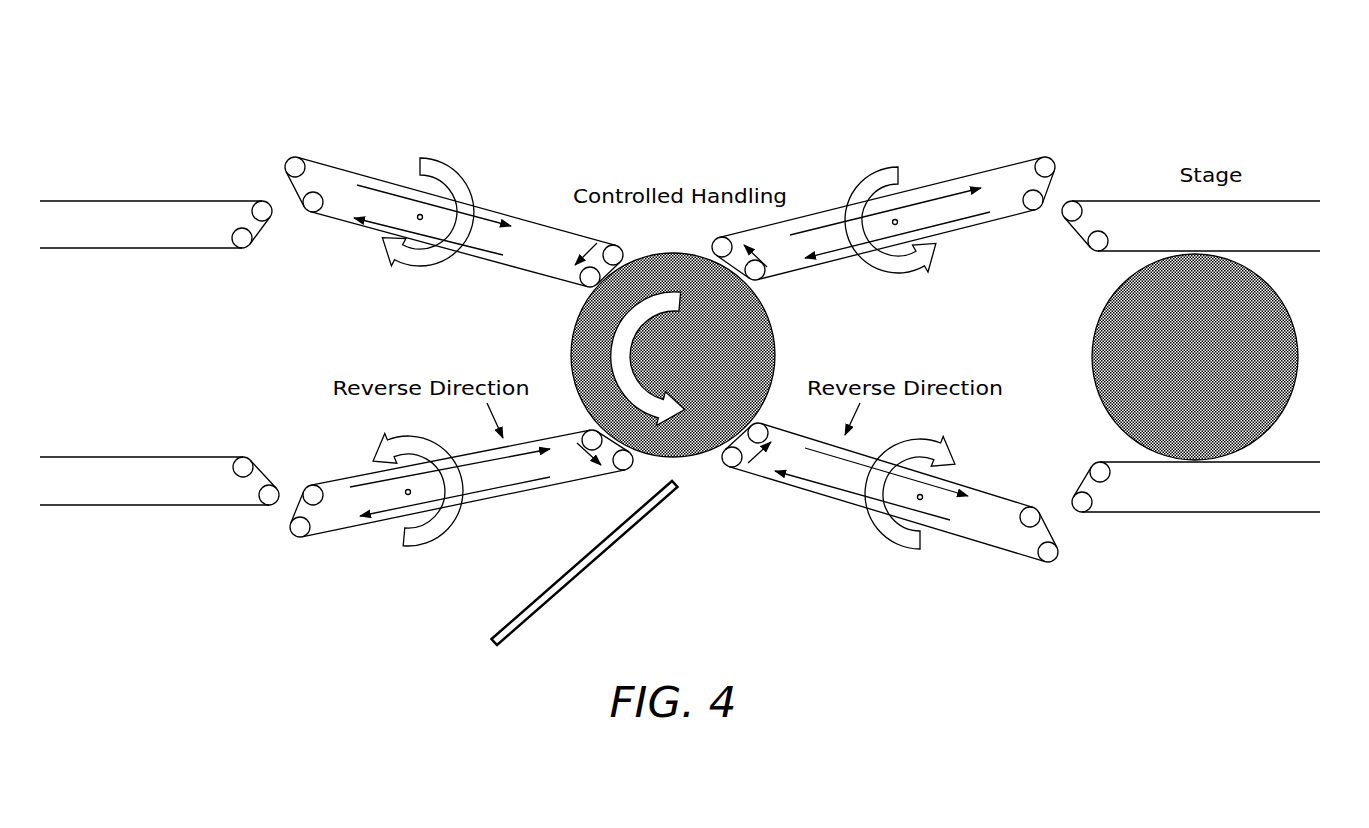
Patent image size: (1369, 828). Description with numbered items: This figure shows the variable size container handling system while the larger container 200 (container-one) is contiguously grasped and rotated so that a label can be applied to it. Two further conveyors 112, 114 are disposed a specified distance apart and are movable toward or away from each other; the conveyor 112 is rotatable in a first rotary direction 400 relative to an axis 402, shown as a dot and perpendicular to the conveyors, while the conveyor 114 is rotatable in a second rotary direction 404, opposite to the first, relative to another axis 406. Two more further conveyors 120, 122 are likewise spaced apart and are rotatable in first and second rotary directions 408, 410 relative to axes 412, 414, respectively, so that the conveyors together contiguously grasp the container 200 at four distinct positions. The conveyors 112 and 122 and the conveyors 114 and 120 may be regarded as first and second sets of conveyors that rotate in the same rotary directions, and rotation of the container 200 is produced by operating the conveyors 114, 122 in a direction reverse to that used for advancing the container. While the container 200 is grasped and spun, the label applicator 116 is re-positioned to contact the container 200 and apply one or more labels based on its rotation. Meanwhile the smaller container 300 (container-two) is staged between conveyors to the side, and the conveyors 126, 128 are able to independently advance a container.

The further conveyor 112 is at (840, 201).
The further conveyor 114 is at (797, 490).
The label applicator 116 is at (594, 580).
The further conveyor 120 is at (318, 154).
The further conveyor 122 is at (329, 540).
The conveyor 126 is at (147, 196).
The conveyor 128 is at (172, 509).
The container 200 is at (780, 354).
The container 300 is at (1287, 299).
The first rotary direction 400 is at (904, 156).
The axis 402 is at (898, 219).
The second rotary direction 404 is at (926, 557).
The axis 406 is at (924, 501).
The first rotary direction 408 is at (463, 166).
The second rotary direction 410 is at (404, 557).
The axis 412 is at (416, 220).
The axis 414 is at (405, 488).